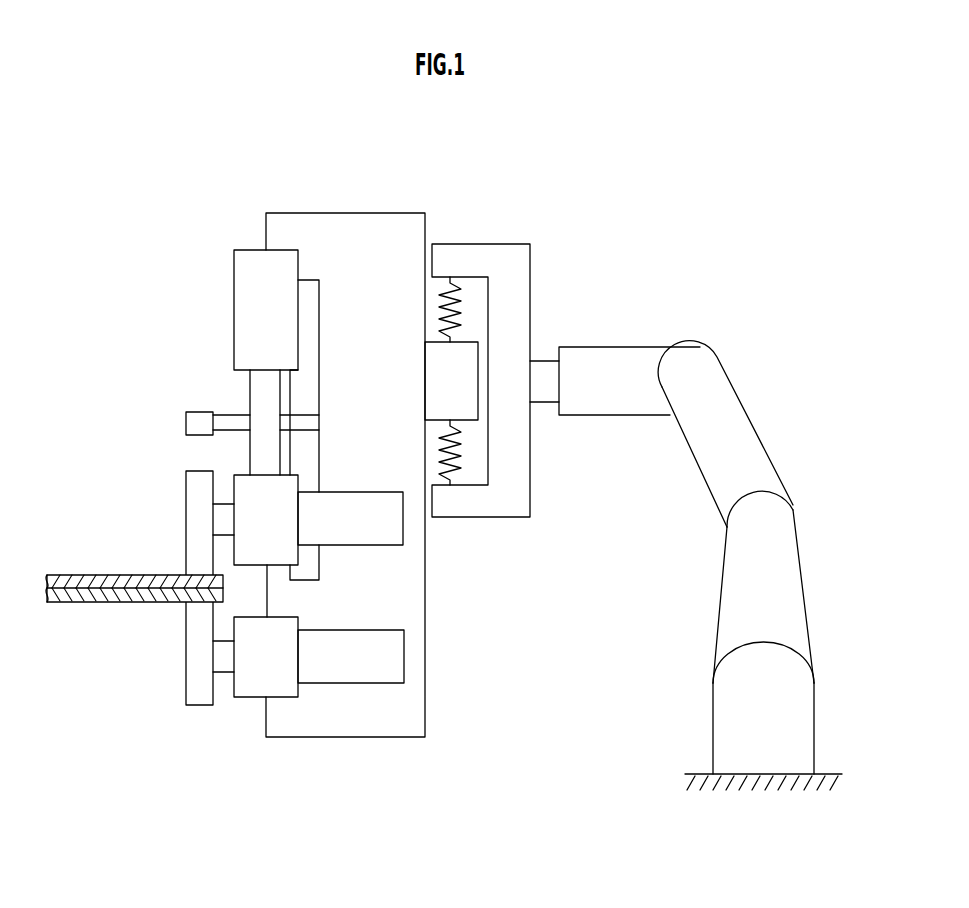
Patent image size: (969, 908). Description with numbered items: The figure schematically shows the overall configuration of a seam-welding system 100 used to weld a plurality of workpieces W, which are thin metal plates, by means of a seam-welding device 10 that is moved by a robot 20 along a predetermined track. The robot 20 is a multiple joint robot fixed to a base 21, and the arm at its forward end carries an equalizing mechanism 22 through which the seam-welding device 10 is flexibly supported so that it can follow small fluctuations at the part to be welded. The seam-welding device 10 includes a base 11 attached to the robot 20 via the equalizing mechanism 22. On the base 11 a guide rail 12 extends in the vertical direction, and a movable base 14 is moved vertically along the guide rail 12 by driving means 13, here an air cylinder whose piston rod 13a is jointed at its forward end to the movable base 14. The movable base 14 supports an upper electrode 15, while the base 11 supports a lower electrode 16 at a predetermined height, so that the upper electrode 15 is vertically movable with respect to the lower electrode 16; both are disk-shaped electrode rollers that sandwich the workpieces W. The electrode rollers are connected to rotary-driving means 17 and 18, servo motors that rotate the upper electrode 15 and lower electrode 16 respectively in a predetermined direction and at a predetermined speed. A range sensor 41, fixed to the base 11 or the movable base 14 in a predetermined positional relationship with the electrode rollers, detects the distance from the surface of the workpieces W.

The seam-welding system 100 is at (441, 180).
The seam-welding device 10 is at (166, 254).
The base 11 is at (350, 737).
The guide rail 12 is at (313, 337).
The driving means 13 is at (244, 307).
The piston rod 13a is at (249, 388).
The movable base 14 is at (242, 477).
The upper electrode 15 is at (188, 520).
The lower electrode 16 is at (185, 649).
The rotary-driving means 17 is at (355, 500).
The rotary-driving means 18 is at (353, 630).
The robot 20 is at (783, 443).
The base 21 is at (796, 790).
The equalizing mechanism 22 is at (511, 257).
The range sensor 41 is at (185, 423).
The workpieces W is at (73, 575).